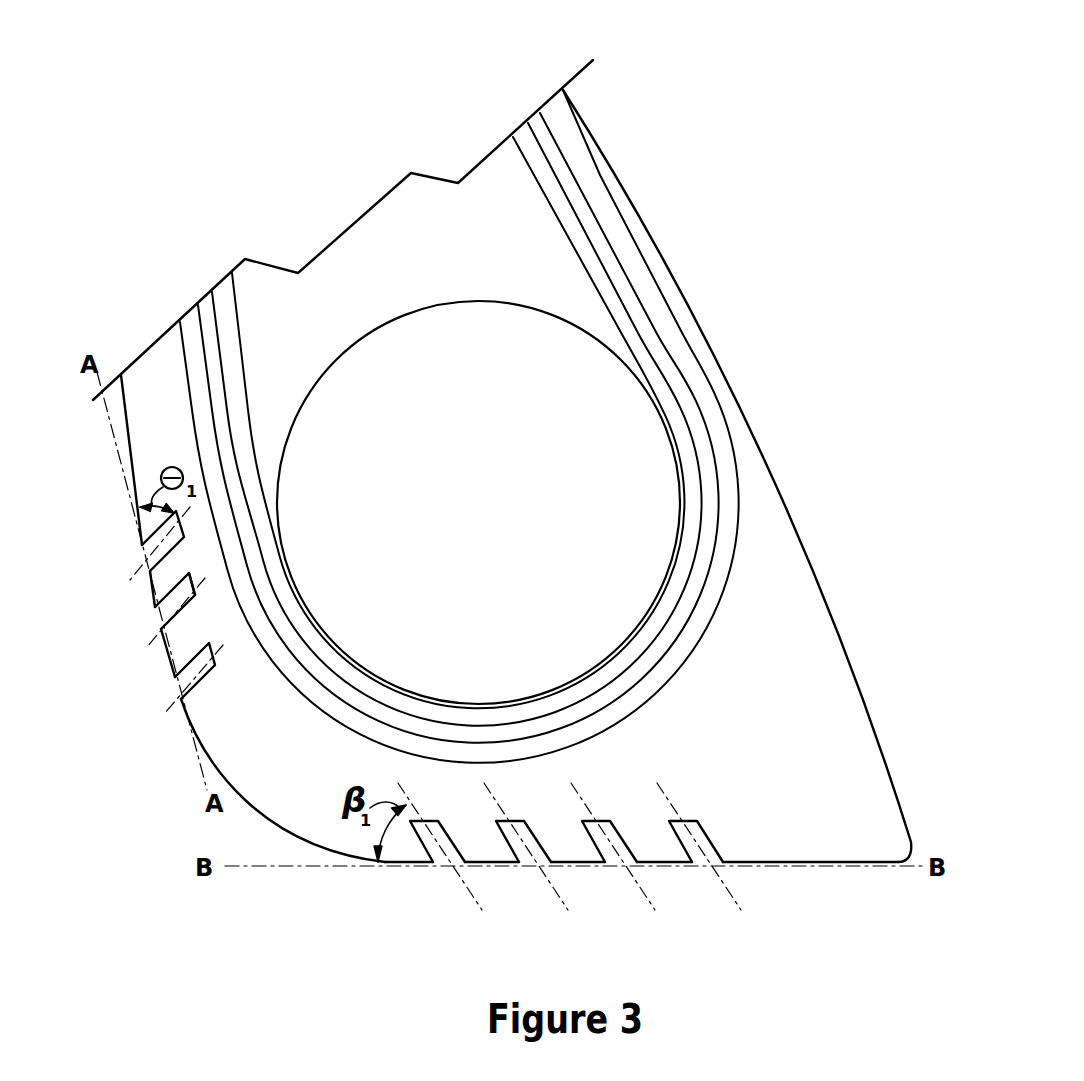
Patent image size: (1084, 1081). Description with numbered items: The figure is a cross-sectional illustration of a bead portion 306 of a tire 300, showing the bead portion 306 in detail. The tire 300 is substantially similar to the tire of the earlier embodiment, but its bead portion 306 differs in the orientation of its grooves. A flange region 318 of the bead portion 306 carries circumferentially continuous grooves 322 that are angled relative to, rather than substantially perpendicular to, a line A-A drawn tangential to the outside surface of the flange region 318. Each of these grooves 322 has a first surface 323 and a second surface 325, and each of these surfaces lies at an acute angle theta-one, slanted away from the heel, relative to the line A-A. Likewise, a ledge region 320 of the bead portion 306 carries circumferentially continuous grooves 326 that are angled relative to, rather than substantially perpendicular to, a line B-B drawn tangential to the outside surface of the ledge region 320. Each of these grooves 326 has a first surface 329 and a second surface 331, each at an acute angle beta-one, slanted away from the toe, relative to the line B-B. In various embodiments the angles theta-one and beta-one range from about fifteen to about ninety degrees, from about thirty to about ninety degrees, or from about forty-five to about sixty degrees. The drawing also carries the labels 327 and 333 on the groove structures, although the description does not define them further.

The tire 300 is at (655, 196).
The bead portion 306 is at (745, 328).
The flange region 318 is at (152, 688).
The ledge region 320 is at (802, 862).
The circumferentially continuous grooves 322 is at (148, 552).
The first surface 323 is at (162, 596).
The second surface 325 is at (178, 636).
The circumferentially continuous grooves 326 is at (612, 842).
The groove side wall 327 is at (197, 596).
The first surface 329 is at (508, 847).
The second surface 331 is at (548, 848).
The third tooth groove 333 is at (513, 820).